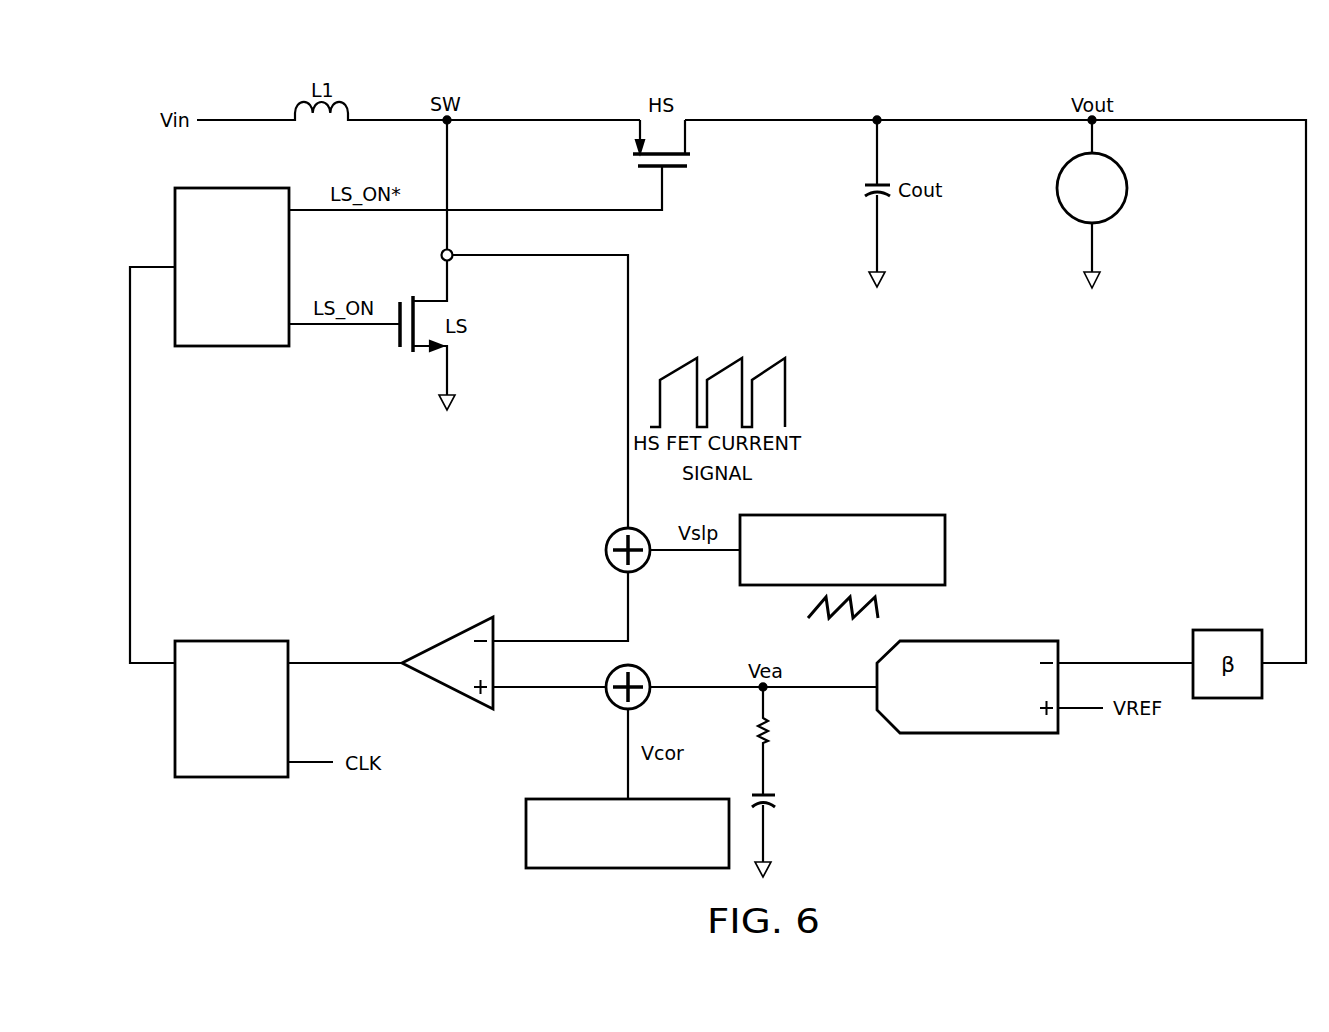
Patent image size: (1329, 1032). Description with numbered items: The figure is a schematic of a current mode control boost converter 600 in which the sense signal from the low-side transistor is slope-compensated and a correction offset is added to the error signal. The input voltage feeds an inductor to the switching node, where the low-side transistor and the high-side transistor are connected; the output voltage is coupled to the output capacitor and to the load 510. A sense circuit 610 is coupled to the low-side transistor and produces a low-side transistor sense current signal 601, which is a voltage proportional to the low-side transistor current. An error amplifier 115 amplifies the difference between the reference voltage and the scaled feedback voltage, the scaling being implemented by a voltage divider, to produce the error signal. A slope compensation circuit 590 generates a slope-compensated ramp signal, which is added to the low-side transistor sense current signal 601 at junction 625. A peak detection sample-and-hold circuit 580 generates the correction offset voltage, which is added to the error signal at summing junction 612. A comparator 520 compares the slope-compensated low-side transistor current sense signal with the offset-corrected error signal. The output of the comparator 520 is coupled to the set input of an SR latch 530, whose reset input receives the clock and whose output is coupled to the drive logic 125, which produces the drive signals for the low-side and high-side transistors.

The boost converter 600 is at (930, 80).
The drive logic 125 is at (232, 188).
The sense circuit 610 is at (443, 253).
The LS transistor sense current signal 601 is at (628, 391).
The load 510 is at (1127, 188).
The slope compensation circuit 590 is at (843, 515).
The junction 625 is at (623, 571).
The comparator 520 is at (449, 641).
The summing junction 612 is at (620, 708).
The SR latch 530 is at (231, 779).
The peak detection sample-and-hold circuit 580 is at (526, 833).
The error amplifier 115 is at (967, 733).